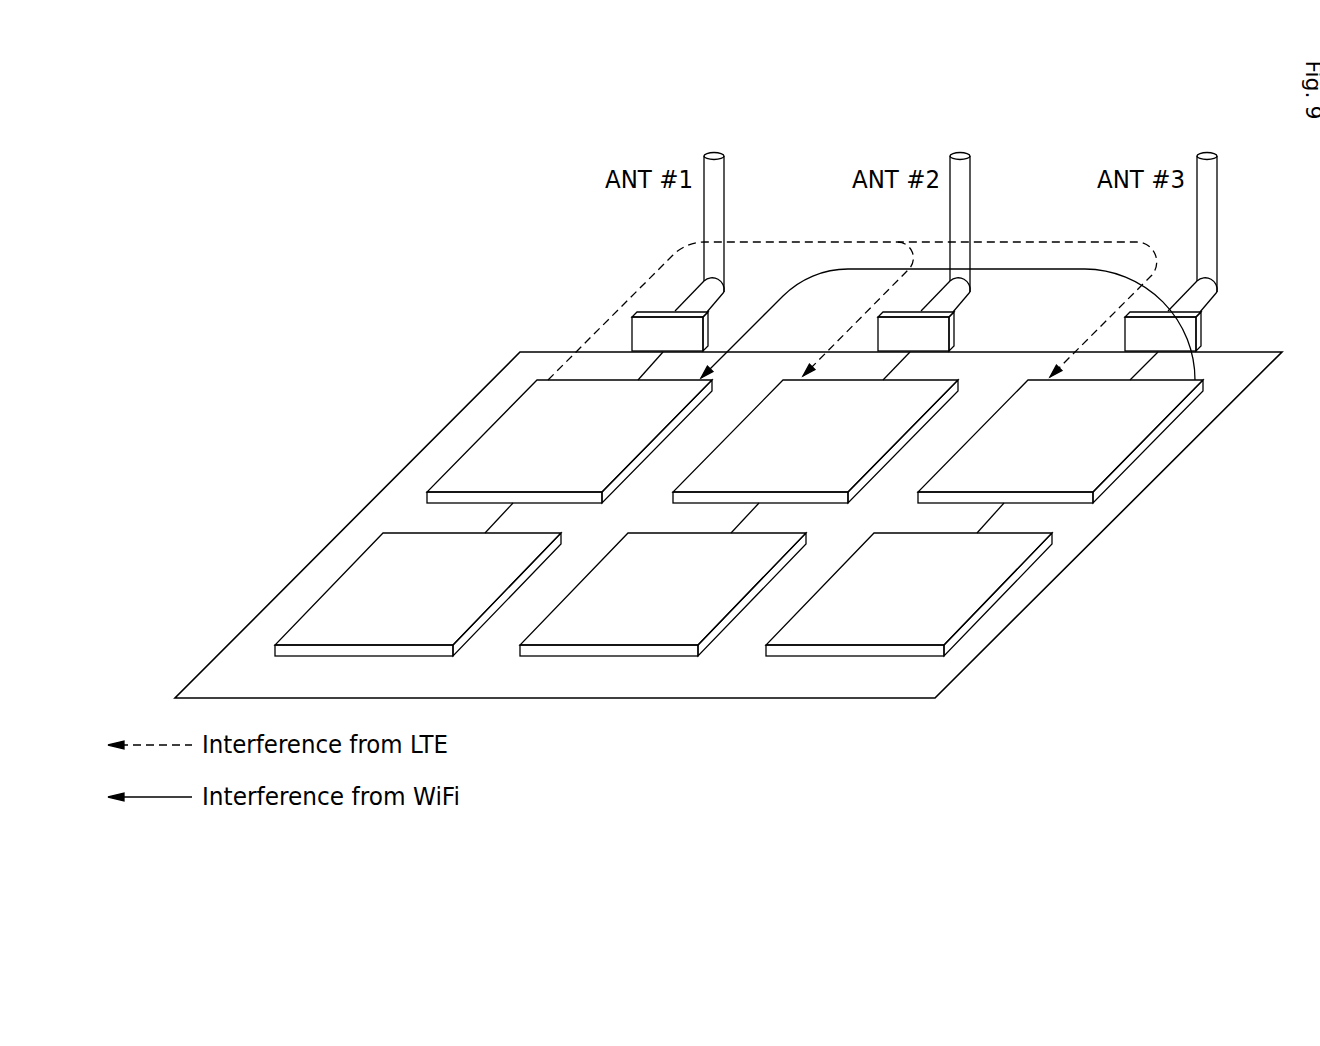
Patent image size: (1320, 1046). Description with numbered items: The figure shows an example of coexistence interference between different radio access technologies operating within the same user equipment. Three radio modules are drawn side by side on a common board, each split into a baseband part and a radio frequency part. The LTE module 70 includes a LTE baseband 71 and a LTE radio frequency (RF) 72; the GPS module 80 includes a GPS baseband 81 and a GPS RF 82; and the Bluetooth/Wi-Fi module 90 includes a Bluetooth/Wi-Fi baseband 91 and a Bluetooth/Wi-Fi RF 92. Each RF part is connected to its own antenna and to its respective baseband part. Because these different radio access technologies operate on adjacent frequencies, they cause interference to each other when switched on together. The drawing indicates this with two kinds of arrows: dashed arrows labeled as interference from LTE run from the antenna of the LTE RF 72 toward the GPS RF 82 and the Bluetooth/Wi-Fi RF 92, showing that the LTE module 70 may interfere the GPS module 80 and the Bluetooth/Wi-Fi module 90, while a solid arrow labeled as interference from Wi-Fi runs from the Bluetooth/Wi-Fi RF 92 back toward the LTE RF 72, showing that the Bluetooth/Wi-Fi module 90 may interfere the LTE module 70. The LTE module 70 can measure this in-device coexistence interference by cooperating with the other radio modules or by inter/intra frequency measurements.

The LTE module 70 is at (448, 535).
The LTE baseband 71 is at (331, 585).
The LTE radio frequency (RF) 72 is at (482, 430).
The GPS module 80 is at (739, 572).
The GPS baseband 81 is at (568, 636).
The GPS RF 82 is at (697, 477).
The Bluetooth/Wi-Fi module 90 is at (1016, 535).
The Bluetooth/Wi-Fi baseband 91 is at (990, 578).
The Bluetooth/Wi-Fi RF 92 is at (1140, 430).